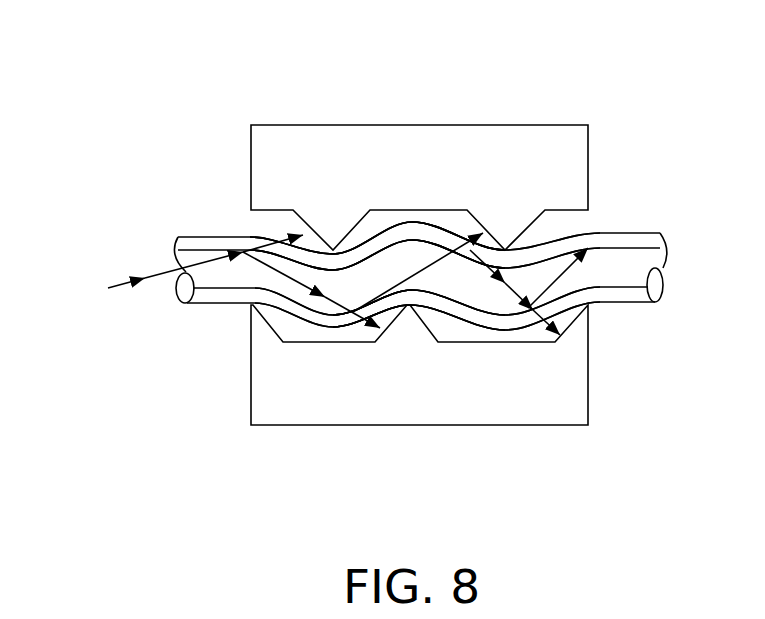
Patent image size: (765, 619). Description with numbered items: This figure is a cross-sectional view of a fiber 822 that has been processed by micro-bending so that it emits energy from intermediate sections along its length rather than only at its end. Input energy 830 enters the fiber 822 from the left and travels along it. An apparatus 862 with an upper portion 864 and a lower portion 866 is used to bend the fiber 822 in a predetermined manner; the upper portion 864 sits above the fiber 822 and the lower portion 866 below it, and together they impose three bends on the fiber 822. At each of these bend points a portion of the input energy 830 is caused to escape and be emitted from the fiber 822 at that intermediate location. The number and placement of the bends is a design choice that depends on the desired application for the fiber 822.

The apparatus 862 is at (315, 269).
The upper portion 864 is at (415, 125).
The lower portion 866 is at (277, 427).
The fiber 822 is at (625, 313).
The input energy 830 is at (153, 275).